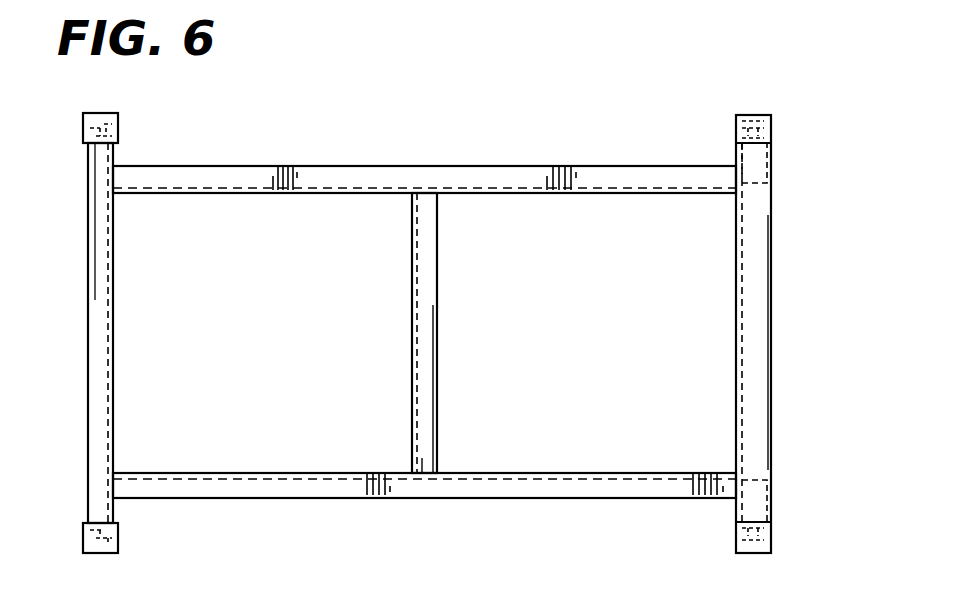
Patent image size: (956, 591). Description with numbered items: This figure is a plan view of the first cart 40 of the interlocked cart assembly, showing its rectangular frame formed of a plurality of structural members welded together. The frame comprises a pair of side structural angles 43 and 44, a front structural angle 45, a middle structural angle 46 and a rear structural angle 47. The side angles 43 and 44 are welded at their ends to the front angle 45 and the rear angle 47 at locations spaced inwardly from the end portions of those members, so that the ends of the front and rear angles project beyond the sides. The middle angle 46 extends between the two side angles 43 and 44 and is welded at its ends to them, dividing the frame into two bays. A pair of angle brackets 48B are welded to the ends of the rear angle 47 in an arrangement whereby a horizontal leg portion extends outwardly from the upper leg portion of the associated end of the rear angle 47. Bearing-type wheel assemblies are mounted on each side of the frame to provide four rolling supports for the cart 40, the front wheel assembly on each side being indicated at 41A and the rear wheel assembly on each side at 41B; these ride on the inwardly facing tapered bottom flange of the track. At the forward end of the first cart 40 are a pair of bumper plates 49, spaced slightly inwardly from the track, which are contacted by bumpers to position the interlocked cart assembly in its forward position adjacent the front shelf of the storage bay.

The first cart 40 is at (454, 340).
The front wheel assembly 41A is at (740, 124).
The rear wheel assembly 41B is at (120, 124).
The side structural angle 43 is at (324, 481).
The side structural angle 44 is at (325, 178).
The front structural angle 45 is at (746, 327).
The middle structural angle 46 is at (457, 333).
The rear structural angle 47 is at (100, 317).
The angle bracket 48B is at (118, 131).
The bumper plate 49 is at (768, 185).